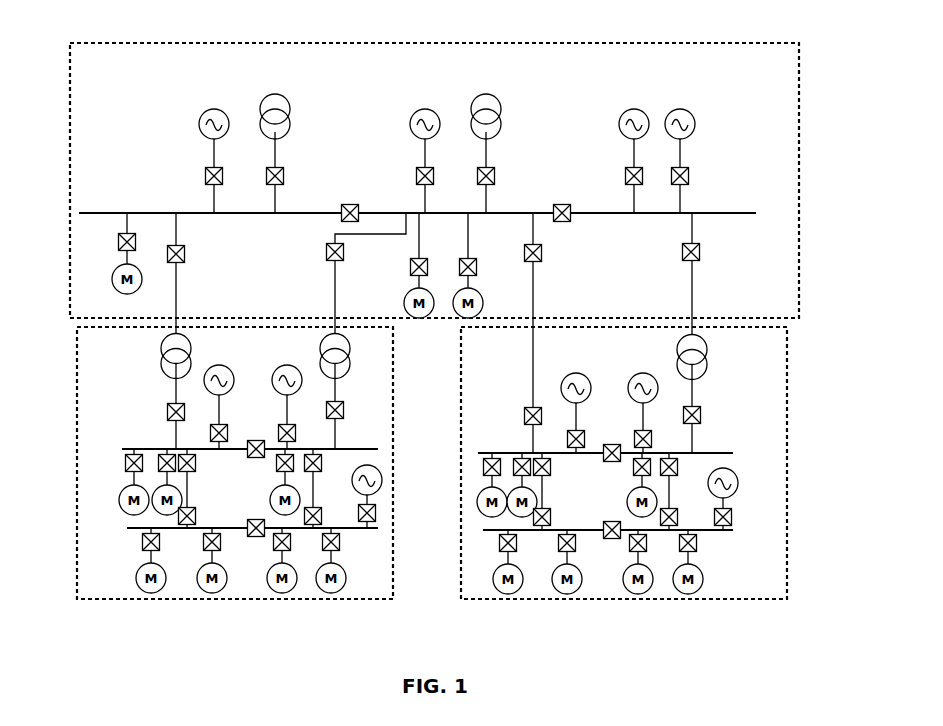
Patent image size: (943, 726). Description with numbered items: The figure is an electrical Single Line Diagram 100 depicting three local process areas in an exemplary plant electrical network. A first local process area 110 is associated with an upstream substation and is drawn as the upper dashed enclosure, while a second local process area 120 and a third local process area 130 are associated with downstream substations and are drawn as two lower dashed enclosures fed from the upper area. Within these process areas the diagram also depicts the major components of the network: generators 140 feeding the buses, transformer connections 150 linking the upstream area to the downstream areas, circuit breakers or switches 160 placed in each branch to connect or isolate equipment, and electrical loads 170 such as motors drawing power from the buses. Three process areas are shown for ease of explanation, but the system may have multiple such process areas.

The electrical Single Line Diagram 100 is at (127, 643).
The first local process area 110 is at (799, 122).
The second local process area 120 is at (77, 507).
The third local process area 130 is at (787, 432).
The generators 140 is at (198, 129).
The transformer connections 150 is at (273, 93).
The circuit breaker or switches 160 is at (705, 250).
The electrical loads 170 is at (112, 290).